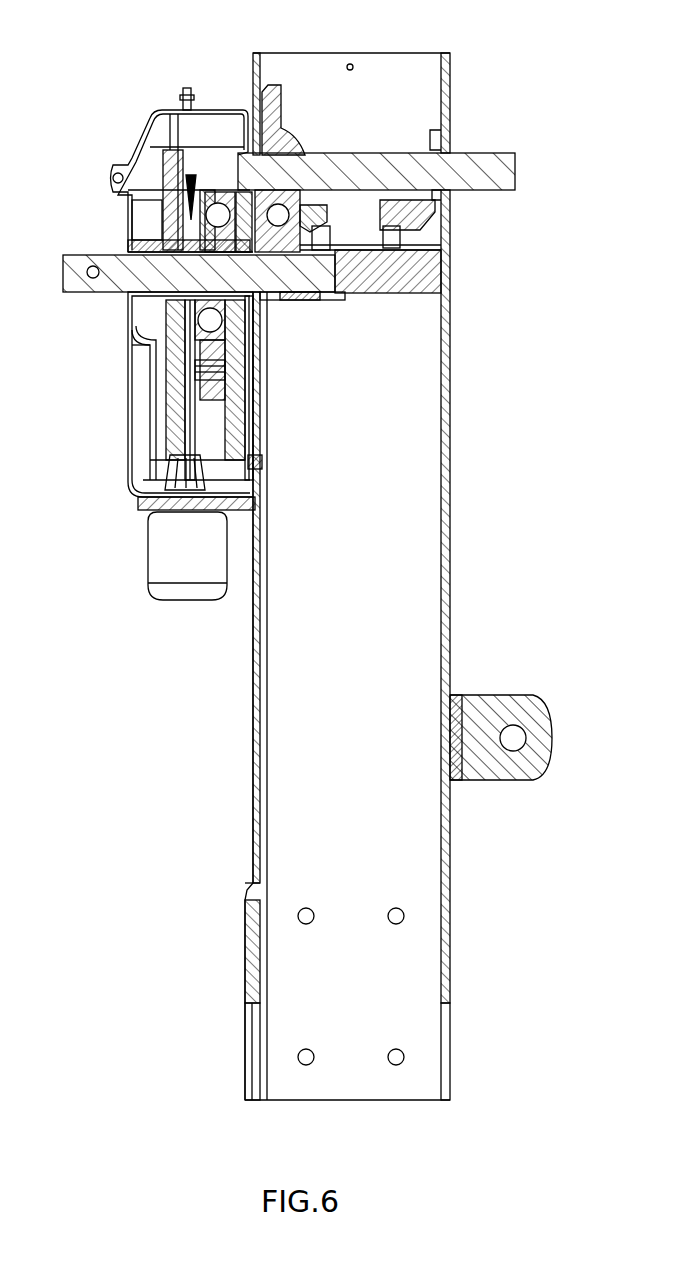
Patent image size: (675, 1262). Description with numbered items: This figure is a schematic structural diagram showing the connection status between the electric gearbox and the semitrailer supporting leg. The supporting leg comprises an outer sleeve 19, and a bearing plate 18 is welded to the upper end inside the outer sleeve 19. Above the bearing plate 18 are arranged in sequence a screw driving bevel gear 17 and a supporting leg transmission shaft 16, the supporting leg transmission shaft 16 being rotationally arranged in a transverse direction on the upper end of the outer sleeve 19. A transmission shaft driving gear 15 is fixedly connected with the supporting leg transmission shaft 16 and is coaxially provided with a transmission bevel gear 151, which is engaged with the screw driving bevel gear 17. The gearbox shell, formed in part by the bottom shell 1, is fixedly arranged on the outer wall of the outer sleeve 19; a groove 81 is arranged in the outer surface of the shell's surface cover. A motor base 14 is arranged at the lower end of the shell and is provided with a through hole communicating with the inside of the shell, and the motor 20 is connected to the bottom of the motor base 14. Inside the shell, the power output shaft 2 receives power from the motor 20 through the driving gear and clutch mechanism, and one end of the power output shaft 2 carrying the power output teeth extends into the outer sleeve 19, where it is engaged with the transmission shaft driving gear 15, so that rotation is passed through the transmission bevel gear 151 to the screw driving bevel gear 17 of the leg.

The bottom shell 1 is at (213, 108).
The transmission shaft driving gear 15 is at (258, 65).
The transmission bevel gear 151 is at (294, 138).
The supporting leg transmission shaft 16 is at (509, 172).
The screw driving bevel gear 17 is at (420, 218).
The bearing plate 18 is at (425, 290).
The outer sleeve 19 is at (448, 352).
The power output shaft 2 is at (72, 277).
The groove 81 is at (143, 407).
The motor base 14 is at (140, 505).
The motor 20 is at (157, 554).